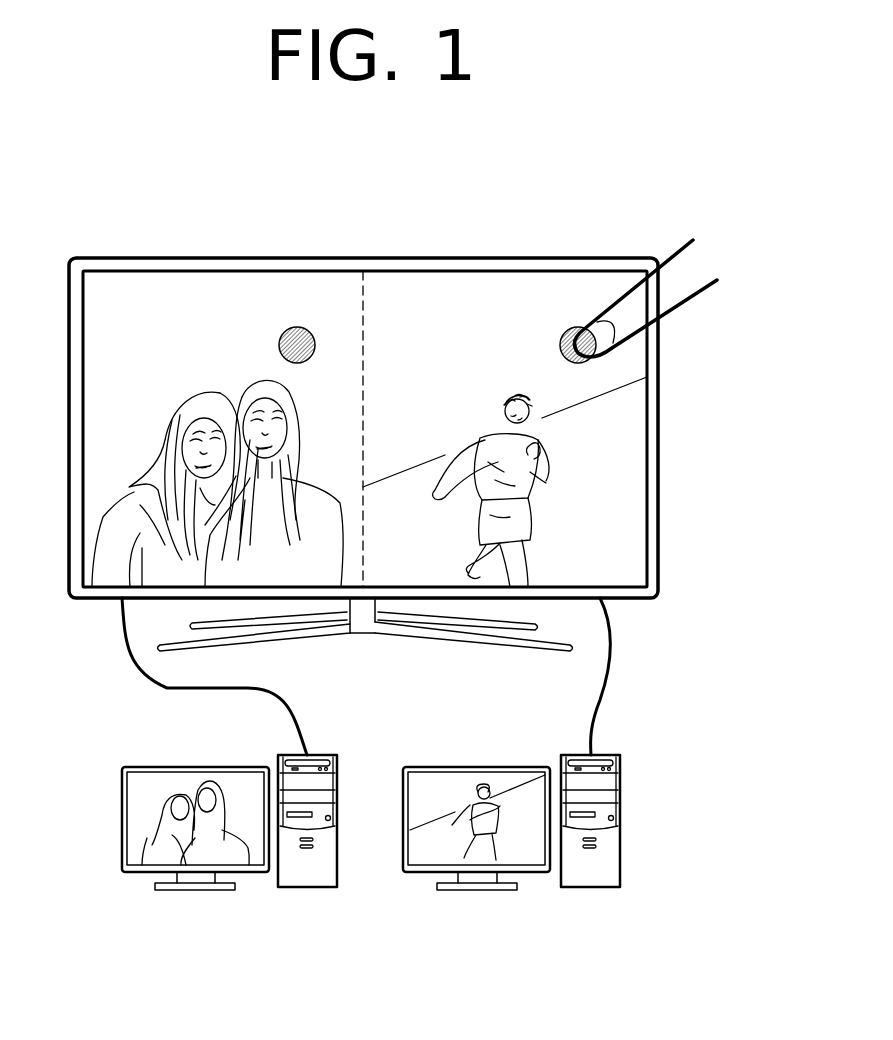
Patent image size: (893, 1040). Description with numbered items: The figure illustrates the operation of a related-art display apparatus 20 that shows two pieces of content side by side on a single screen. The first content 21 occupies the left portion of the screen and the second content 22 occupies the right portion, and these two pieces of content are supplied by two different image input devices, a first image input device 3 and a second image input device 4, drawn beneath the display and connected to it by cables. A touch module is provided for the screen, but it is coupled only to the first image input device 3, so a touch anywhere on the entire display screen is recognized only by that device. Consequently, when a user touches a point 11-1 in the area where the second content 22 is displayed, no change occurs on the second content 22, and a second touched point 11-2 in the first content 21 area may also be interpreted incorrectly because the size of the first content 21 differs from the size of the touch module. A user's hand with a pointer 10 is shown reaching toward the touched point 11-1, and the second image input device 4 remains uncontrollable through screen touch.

The first image input device 3 is at (152, 766).
The second image input device 4 is at (433, 766).
The 3D glasses 10 is at (681, 268).
The point 11-1 is at (565, 330).
The second sensor 11-2 is at (297, 327).
The display apparatus 20 is at (363, 454).
The first content 21 is at (121, 283).
The second content 22 is at (445, 283).